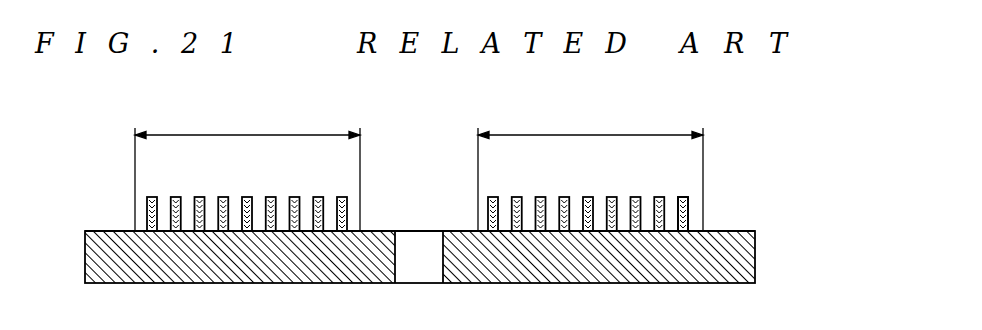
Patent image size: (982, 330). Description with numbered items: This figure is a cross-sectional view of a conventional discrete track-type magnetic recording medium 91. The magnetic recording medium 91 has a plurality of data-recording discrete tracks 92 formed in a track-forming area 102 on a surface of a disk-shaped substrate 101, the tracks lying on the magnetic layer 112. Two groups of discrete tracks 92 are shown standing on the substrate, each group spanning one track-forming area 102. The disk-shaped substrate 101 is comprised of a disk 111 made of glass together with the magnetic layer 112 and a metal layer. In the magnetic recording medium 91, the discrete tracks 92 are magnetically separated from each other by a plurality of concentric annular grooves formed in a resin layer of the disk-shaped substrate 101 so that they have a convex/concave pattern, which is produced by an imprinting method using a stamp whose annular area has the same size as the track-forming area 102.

The magnetic recording medium 91 is at (447, 117).
The discrete track 92 is at (417, 187).
The disk-shaped substrate 101 is at (762, 237).
The track-forming area 102 is at (419, 171).
The disk 111 is at (755, 268).
The magnetic layer 112 is at (693, 216).